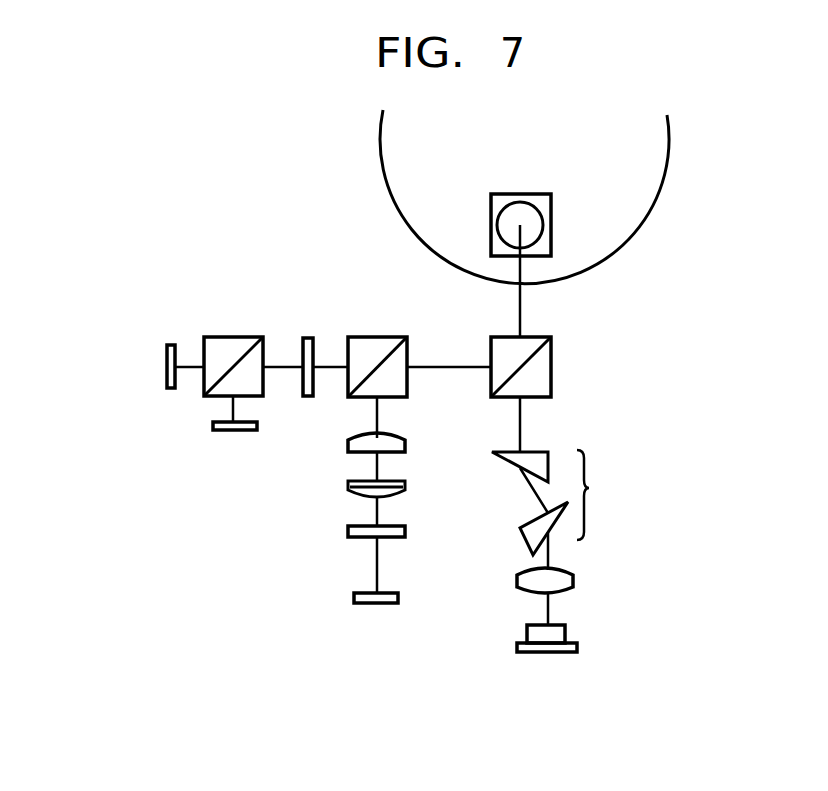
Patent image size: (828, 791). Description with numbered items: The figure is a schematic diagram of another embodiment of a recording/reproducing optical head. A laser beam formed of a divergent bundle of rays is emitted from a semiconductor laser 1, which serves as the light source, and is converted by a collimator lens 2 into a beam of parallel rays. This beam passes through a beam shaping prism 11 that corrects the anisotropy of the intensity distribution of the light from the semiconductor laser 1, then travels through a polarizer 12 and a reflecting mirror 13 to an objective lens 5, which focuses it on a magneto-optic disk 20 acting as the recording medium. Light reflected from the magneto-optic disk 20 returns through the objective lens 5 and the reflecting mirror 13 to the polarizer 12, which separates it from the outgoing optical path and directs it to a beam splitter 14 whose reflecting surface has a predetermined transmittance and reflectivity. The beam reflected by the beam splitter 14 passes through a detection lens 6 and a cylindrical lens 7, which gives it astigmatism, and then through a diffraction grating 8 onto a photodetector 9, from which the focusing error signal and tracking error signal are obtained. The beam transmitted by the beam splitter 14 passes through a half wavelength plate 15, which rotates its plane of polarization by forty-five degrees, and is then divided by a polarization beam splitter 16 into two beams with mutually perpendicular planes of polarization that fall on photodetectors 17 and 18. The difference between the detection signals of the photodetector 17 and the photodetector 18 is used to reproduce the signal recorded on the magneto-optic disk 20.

The semiconductor laser 1 is at (565, 630).
The collimator lens 2 is at (573, 578).
The objective lens 5 is at (541, 208).
The detection lens 6 is at (348, 447).
The cylindrical lens 7 is at (348, 490).
The diffraction grating 8 is at (348, 530).
The photodetector 9 is at (354, 598).
The beam shaping prism 11 is at (589, 488).
The polarizer 12 is at (550, 368).
The reflecting mirror 13 is at (551, 240).
The beam splitter 14 is at (377, 337).
The half wavelength plate 15 is at (308, 338).
The polarization beam splitter 16 is at (240, 337).
The photodetector 17 is at (164, 358).
The photodetector 18 is at (213, 427).
The magneto-optic disk 20 is at (380, 158).